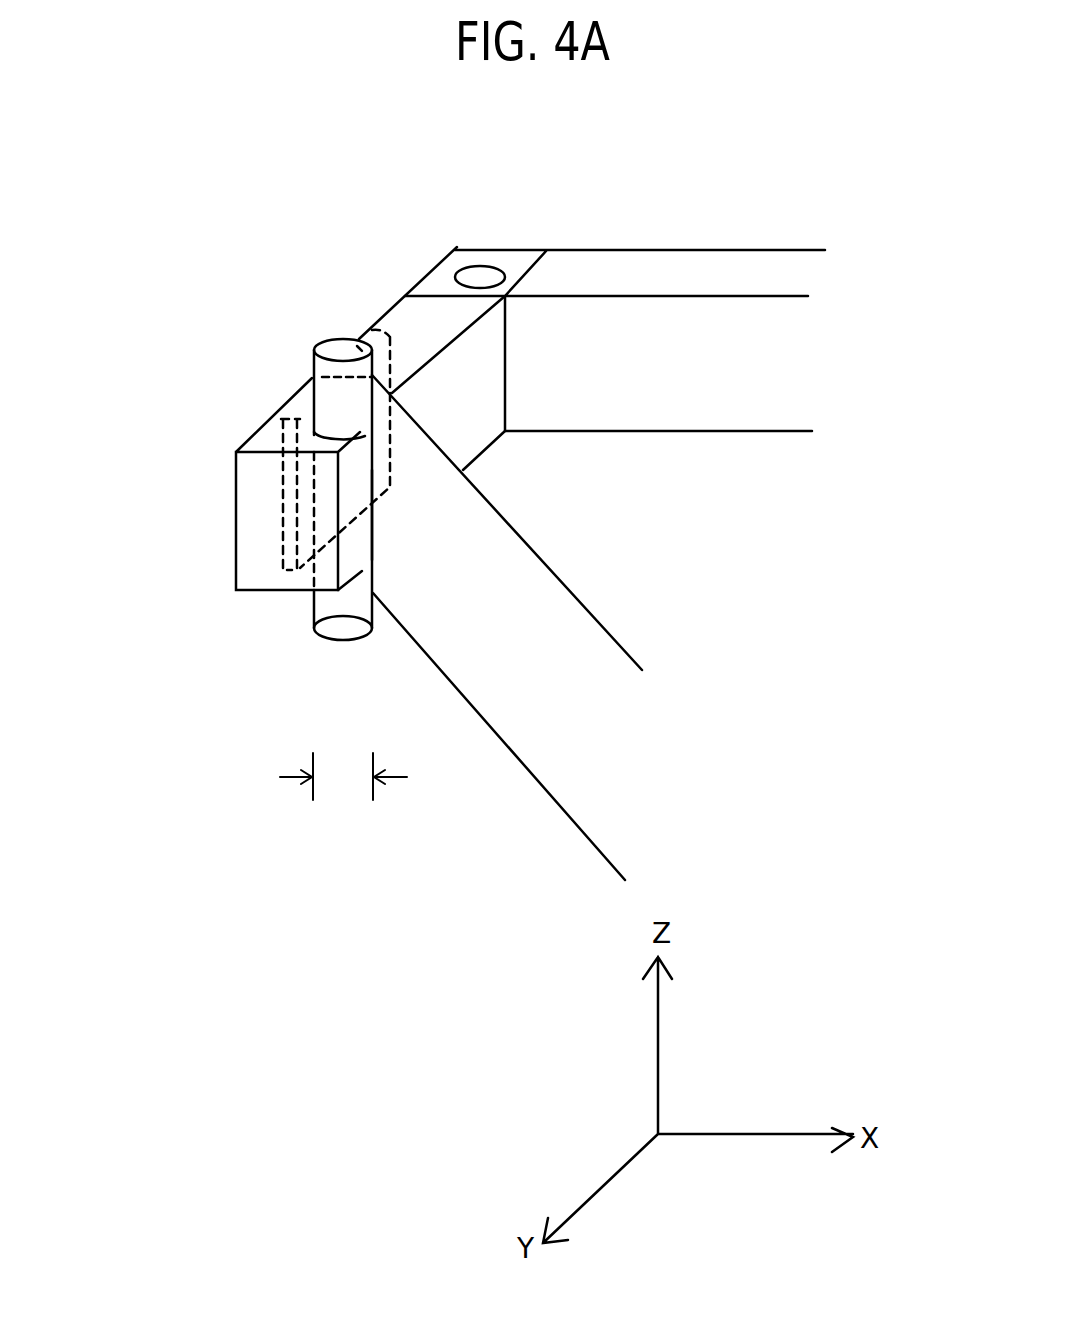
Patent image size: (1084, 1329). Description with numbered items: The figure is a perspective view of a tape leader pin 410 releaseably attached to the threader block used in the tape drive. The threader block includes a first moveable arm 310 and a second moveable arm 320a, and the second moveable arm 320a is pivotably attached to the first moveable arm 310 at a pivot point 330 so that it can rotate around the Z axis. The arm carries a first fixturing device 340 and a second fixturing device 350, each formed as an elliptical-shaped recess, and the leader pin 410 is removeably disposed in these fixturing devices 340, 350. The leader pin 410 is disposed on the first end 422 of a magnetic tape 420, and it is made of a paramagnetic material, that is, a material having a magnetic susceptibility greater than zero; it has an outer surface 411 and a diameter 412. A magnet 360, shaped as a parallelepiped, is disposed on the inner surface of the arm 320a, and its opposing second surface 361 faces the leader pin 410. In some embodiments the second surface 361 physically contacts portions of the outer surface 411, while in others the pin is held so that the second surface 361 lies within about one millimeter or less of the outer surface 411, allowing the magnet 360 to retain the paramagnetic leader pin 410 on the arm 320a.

The first moveable arm 310 is at (692, 363).
The second moveable arm 320a is at (376, 298).
The pivot point 330 is at (483, 277).
The first fixturing device 340 is at (310, 420).
The second fixturing device 350 is at (372, 578).
The magnet 360 is at (322, 515).
The second surface 361 is at (357, 463).
The tape leader pin 410 is at (330, 662).
The outer surface 411 is at (357, 530).
The diameter 412 is at (347, 782).
The magnetic tape 420 is at (572, 678).
The first end 422 is at (402, 440).